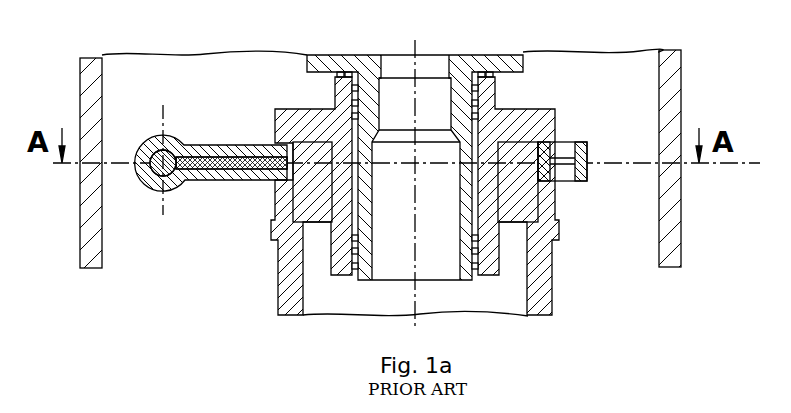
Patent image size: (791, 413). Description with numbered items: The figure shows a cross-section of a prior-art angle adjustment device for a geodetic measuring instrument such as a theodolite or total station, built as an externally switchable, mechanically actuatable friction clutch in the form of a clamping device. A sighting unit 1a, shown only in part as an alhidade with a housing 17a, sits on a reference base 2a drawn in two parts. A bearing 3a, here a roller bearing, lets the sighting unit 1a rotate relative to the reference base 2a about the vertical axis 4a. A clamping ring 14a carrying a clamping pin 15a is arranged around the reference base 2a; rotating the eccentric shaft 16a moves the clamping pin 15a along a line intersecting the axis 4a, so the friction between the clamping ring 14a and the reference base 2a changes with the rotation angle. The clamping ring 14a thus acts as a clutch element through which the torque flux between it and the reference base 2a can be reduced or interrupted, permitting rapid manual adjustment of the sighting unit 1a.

The sighting unit 1a is at (511, 64).
The reference base 2a is at (488, 262).
The bearing 3a is at (356, 272).
The axis 4a is at (415, 52).
The clamping ring 14a is at (241, 155).
The clamping pin 15a is at (205, 155).
The eccentric shaft 16a is at (155, 150).
The housing 17a is at (666, 69).